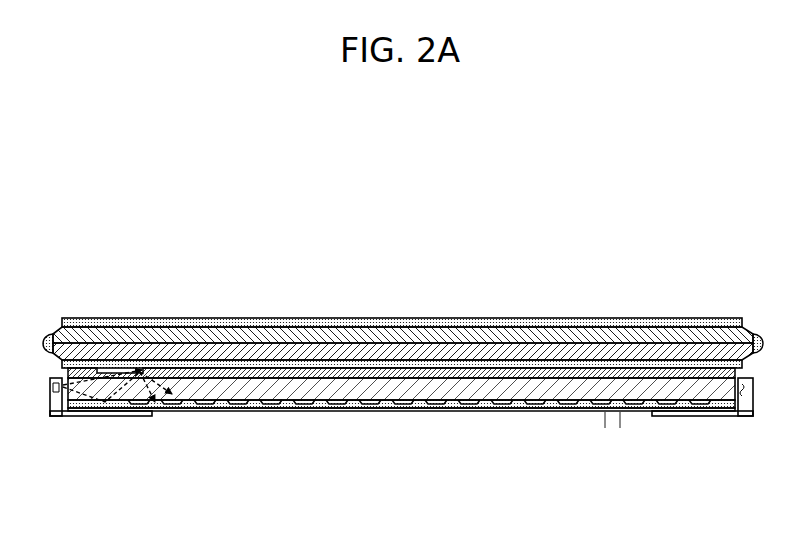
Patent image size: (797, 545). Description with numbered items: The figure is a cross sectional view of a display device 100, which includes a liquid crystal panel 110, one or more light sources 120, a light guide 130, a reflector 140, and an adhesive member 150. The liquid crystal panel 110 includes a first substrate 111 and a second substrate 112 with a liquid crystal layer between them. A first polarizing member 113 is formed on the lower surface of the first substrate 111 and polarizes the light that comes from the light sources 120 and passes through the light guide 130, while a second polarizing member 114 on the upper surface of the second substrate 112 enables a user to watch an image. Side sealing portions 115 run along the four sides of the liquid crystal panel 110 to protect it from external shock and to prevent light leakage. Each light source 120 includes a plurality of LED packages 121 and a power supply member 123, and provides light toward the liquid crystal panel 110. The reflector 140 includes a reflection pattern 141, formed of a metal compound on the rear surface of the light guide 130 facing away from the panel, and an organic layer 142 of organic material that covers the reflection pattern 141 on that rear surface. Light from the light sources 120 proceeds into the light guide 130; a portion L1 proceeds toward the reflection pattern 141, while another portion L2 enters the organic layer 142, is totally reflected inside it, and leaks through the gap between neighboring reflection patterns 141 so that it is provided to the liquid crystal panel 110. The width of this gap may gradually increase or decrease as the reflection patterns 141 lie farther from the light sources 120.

The display device 100 is at (137, 207).
The liquid crystal panel 110 is at (522, 252).
The first substrate 111 is at (365, 353).
The second substrate 112 is at (420, 338).
The first polarizing member 113 is at (460, 363).
The second polarizing member 114 is at (515, 321).
The side sealing portion 115 is at (767, 335).
The light source 120 is at (760, 482).
The LED package 121 is at (744, 416).
The power supply member 123 is at (694, 416).
The light guide 130 is at (287, 399).
The reflector 140 is at (433, 463).
The reflection pattern 141 is at (368, 403).
The organic layer 142 is at (447, 409).
The adhesive member 150 is at (716, 373).
The first light portion L1 is at (103, 395).
The second light portion L2 is at (103, 398).